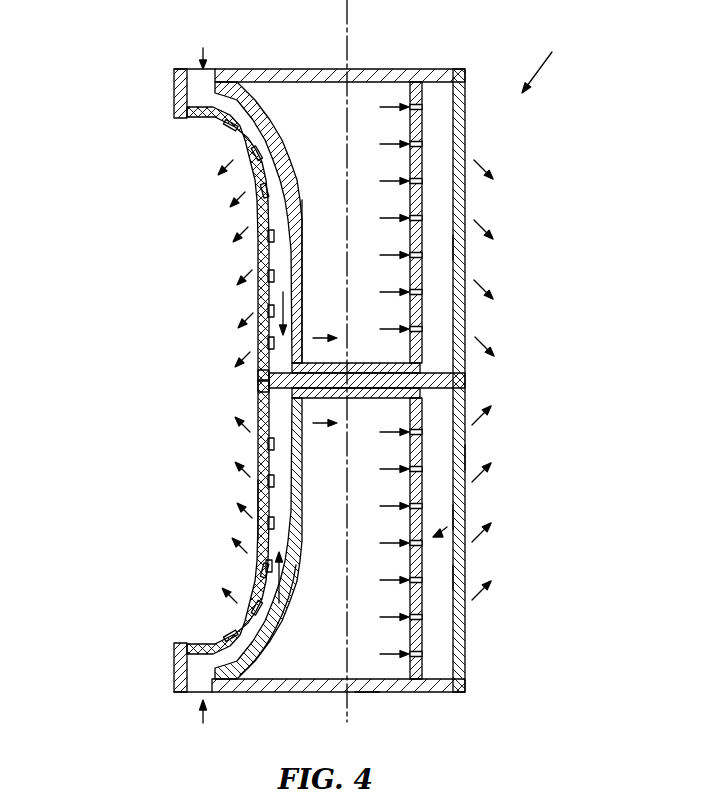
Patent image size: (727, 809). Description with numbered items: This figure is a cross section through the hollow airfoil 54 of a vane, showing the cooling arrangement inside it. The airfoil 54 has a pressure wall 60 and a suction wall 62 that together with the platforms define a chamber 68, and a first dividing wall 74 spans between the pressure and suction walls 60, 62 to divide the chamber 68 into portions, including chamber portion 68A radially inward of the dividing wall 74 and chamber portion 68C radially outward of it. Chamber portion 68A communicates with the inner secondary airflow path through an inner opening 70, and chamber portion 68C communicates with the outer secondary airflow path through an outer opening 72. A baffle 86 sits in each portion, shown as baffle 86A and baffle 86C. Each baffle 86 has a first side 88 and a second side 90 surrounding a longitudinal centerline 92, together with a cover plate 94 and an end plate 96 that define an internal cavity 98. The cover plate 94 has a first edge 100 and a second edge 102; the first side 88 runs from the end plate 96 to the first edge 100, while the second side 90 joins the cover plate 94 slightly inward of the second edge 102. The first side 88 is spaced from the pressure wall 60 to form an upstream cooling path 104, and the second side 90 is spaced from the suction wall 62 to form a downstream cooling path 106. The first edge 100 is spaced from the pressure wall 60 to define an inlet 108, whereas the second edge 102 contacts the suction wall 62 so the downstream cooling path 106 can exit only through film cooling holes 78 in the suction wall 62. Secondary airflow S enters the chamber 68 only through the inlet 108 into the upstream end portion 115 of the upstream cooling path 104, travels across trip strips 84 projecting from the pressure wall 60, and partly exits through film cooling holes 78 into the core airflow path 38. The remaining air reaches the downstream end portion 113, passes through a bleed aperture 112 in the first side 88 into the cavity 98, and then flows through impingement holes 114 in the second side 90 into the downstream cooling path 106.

The core airflow path 38 is at (129, 253).
The hollow airfoil 54 is at (549, 64).
The pressure wall 60 is at (258, 516).
The suction wall 62 is at (465, 458).
The chamber 68 is at (458, 517).
The chamber portion 68A is at (435, 579).
The chamber portion 68C is at (437, 247).
The inner opening 70 is at (313, 693).
The outer opening 72 is at (328, 68).
The first dividing wall 74 is at (441, 374).
The film cooling holes 78 is at (252, 214).
The trip strips 84 is at (297, 314).
The baffle 86 is at (422, 125).
The baffle 86A is at (293, 625).
The baffle 86C is at (303, 210).
The first side 88 is at (285, 133).
The second side 90 is at (408, 163).
The longitudinal centerline 92 is at (349, 16).
The cover plate 94 is at (367, 693).
The end plate 96 is at (367, 362).
The internal cavity 98 is at (388, 251).
The first edge 100 is at (210, 68).
The second edge 102 is at (458, 68).
The upstream cooling path 104 is at (278, 208).
The downstream cooling path 106 is at (432, 302).
The inlet 108 is at (172, 66).
The bleed aperture 112 is at (260, 380).
The downstream end portion 113 is at (290, 346).
The impingement holes 114 is at (424, 145).
The upstream end portion 115 is at (243, 127).
The secondary airflow S is at (198, 52).